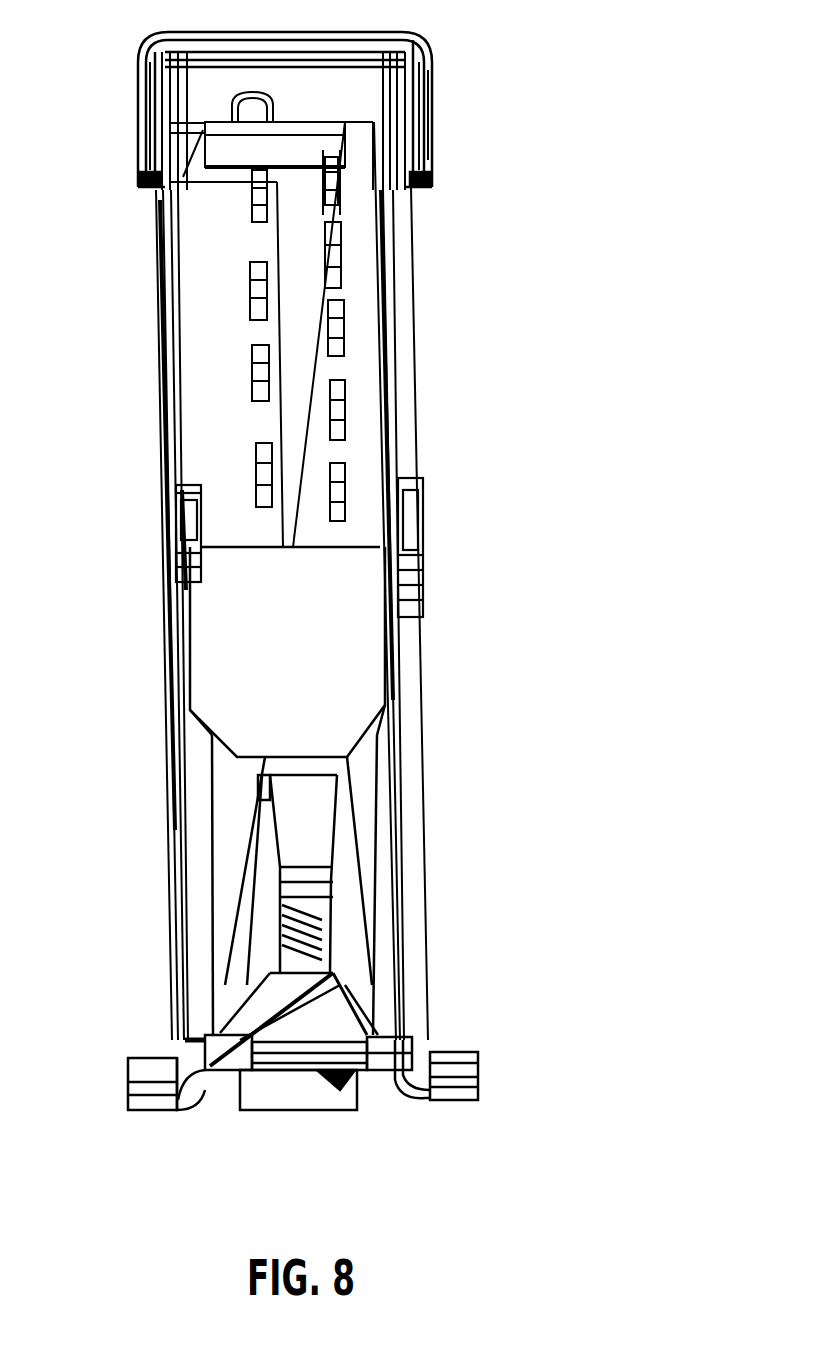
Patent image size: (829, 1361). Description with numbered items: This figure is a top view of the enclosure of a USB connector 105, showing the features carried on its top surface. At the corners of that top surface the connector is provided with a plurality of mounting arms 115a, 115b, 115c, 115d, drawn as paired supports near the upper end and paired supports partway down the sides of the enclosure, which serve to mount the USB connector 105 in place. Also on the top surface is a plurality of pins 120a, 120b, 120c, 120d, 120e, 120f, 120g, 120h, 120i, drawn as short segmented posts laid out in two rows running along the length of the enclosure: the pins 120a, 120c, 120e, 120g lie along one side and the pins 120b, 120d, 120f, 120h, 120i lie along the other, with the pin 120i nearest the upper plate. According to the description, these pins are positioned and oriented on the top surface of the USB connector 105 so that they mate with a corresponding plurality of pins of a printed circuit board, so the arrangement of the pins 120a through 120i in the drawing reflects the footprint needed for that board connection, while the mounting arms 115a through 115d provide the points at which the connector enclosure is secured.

The USB connector 105 is at (155, 1108).
The mounting arm 115a is at (176, 535).
The mounting arm 115b is at (417, 545).
The mounting arm 115c is at (140, 72).
The mounting arm 115d is at (425, 56).
The pin 120a is at (258, 445).
The pin 120b is at (340, 487).
The pin 120c is at (258, 360).
The pin 120d is at (340, 400).
The pin 120e is at (258, 290).
The pin 120f is at (340, 325).
The pin 120g is at (255, 202).
The pin 120h is at (348, 238).
The pin 120i is at (345, 158).